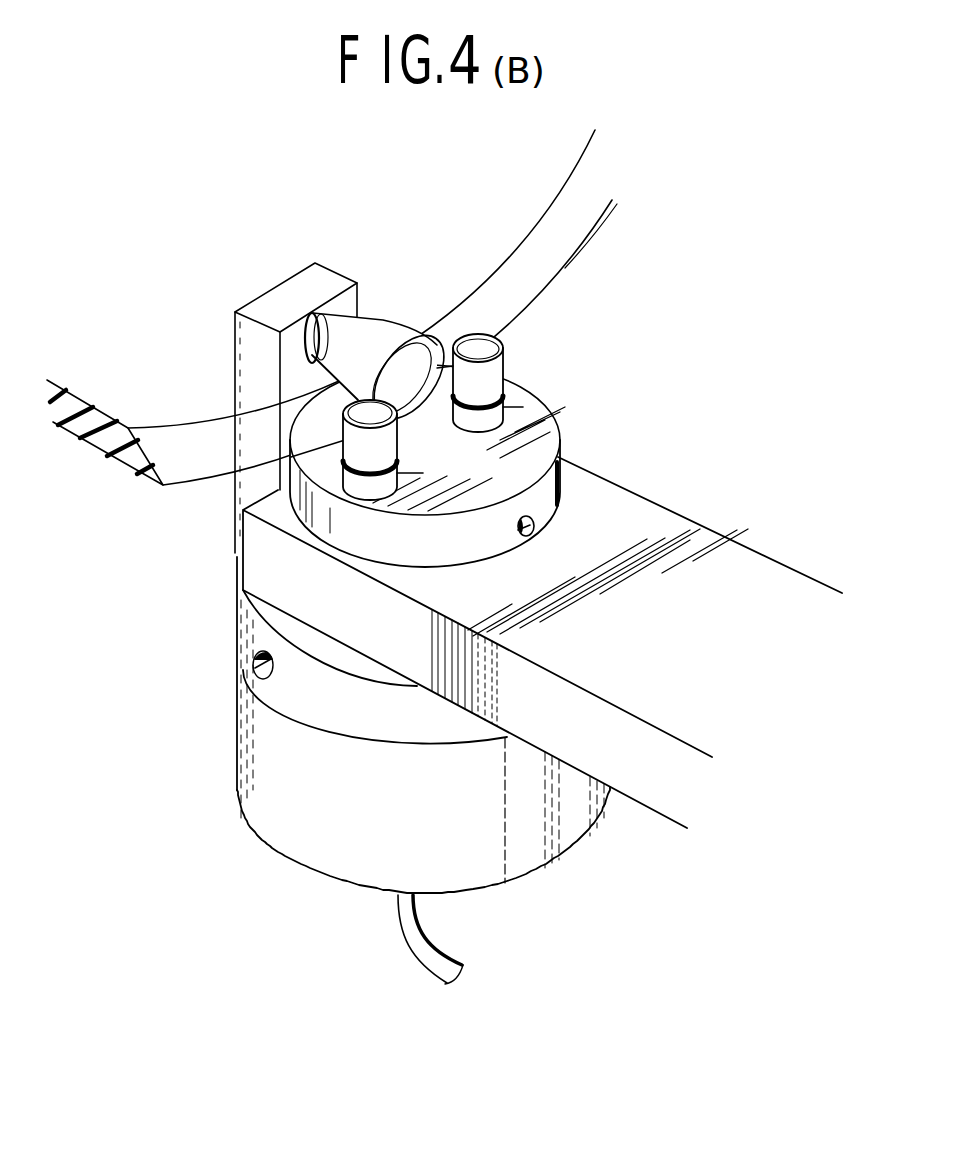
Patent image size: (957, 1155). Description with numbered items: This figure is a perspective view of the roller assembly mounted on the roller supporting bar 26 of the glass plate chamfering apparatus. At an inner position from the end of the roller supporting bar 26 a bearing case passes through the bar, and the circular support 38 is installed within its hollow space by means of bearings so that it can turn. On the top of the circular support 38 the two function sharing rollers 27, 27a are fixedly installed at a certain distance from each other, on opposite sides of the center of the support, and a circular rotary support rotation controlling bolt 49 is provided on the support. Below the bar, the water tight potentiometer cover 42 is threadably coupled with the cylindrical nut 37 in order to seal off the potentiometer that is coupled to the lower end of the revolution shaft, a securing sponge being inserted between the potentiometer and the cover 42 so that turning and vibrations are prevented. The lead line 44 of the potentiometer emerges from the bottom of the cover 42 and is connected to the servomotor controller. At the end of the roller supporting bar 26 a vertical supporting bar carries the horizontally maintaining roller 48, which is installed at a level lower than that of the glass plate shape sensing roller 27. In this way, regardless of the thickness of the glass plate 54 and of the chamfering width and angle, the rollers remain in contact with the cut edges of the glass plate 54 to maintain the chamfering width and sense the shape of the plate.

The roller supporting bar 26 is at (735, 555).
The function sharing roller 27 is at (488, 380).
The function sharing roller 27a is at (377, 447).
The cylindrical nut 37 is at (252, 632).
The circular support 38 is at (555, 415).
The water tight potentiometer cover 42 is at (252, 778).
The lead line 44 is at (420, 932).
The horizontally maintaining roller 48 is at (392, 335).
The circular rotary support rotation controlling bolt 49 is at (530, 518).
The glass plate 54 is at (177, 252).